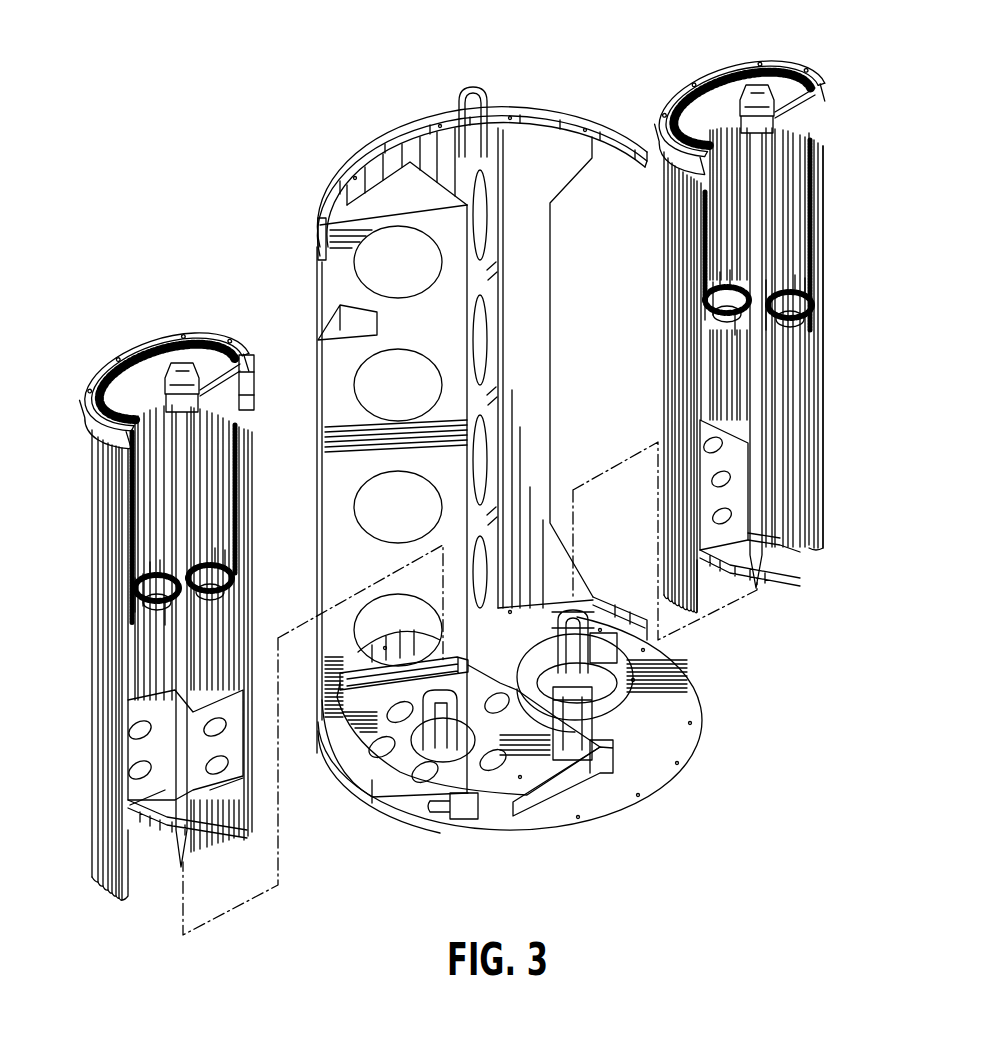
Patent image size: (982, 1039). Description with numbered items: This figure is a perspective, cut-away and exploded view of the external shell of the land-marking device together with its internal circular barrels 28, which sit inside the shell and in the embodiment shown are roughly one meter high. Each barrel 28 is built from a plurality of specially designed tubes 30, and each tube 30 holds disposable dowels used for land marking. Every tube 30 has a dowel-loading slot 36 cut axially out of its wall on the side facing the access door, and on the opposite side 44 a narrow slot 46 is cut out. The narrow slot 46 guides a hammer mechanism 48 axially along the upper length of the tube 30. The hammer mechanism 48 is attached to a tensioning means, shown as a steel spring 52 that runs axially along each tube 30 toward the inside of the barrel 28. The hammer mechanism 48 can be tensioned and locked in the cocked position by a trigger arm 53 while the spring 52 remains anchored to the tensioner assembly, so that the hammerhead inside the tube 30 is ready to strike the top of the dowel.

The internal circular barrel 28 is at (106, 400).
The tube 30 is at (820, 452).
The dowel-loading slot 36 is at (117, 843).
The side 44 is at (800, 523).
The narrow slot 46 is at (800, 187).
The hammer mechanism 48 is at (243, 400).
The steel spring 52 is at (242, 453).
The trigger arm 53 is at (203, 362).